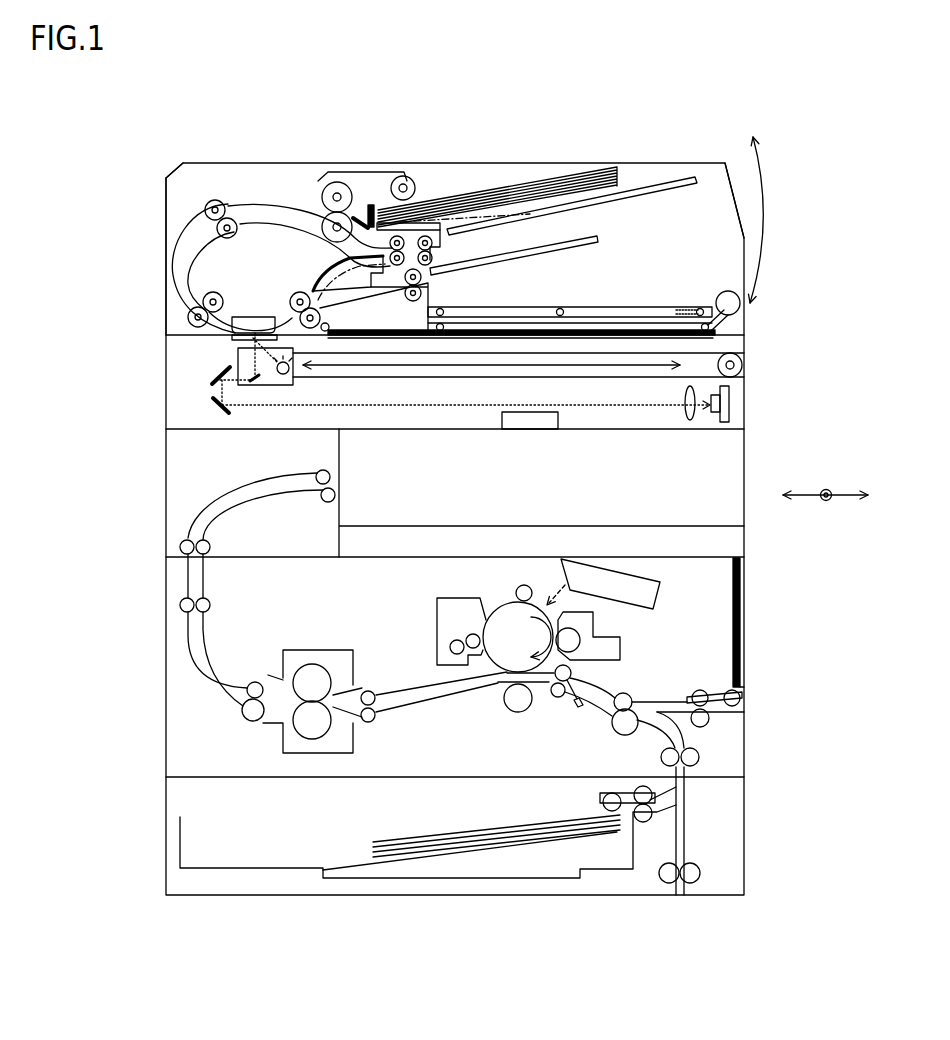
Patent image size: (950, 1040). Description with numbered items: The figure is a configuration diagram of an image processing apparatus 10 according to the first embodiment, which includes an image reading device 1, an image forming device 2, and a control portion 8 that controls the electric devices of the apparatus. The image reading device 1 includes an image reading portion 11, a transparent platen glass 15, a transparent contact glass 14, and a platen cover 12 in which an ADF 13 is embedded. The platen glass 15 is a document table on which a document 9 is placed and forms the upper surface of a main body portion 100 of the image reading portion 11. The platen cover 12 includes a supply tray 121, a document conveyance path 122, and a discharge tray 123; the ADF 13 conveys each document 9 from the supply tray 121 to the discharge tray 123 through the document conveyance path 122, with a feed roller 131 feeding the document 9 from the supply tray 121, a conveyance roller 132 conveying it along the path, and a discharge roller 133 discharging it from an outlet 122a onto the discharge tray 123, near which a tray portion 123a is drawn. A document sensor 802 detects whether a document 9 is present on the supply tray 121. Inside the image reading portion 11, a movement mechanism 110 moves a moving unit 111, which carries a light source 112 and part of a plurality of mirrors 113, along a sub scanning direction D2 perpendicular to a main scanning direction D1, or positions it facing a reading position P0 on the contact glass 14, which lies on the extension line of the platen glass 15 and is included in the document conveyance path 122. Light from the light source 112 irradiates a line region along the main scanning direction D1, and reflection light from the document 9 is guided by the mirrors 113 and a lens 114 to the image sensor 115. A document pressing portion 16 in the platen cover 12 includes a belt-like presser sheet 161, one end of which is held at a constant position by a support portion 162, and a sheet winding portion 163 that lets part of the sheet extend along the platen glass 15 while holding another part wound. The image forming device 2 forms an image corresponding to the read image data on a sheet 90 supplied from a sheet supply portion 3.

The main body portion 100 is at (166, 412).
The image reading device 1 is at (114, 321).
The image processing apparatus 10 is at (258, 140).
The image reading portion 11 is at (164, 380).
The platen cover 12 is at (164, 313).
The ADF 13 is at (190, 197).
The contact glass 14 is at (232, 338).
The platen glass 15 is at (617, 338).
The document pressing portion 16 is at (745, 305).
The document 9 is at (540, 180).
The control portion 8 is at (558, 422).
The image forming device 2 is at (720, 628).
The sheet supply portion 3 is at (180, 847).
The sheet 90 is at (438, 836).
The movement mechanism 110 is at (740, 372).
The moving unit 111 is at (236, 360).
The light source 112 is at (292, 378).
The mirrors 113 is at (225, 406).
The lens 114 is at (685, 404).
The image sensor 115 is at (732, 400).
The supply tray 121 is at (685, 178).
The document conveyance path 122 is at (180, 240).
The outlet 122a is at (430, 282).
The discharge tray 123 is at (672, 303).
The tray extension 123a is at (575, 310).
The feed roller 131 is at (405, 178).
The conveyance roller 132 is at (212, 200).
The discharge roller 133 is at (430, 268).
The presser sheet 161 is at (600, 332).
The support portion 162 is at (330, 326).
The sheet winding portion 163 is at (718, 292).
The document sensor 802 is at (533, 215).
The reading position P0 is at (255, 324).
The main scanning direction D1 is at (825, 482).
The sub scanning direction D2 is at (769, 493).